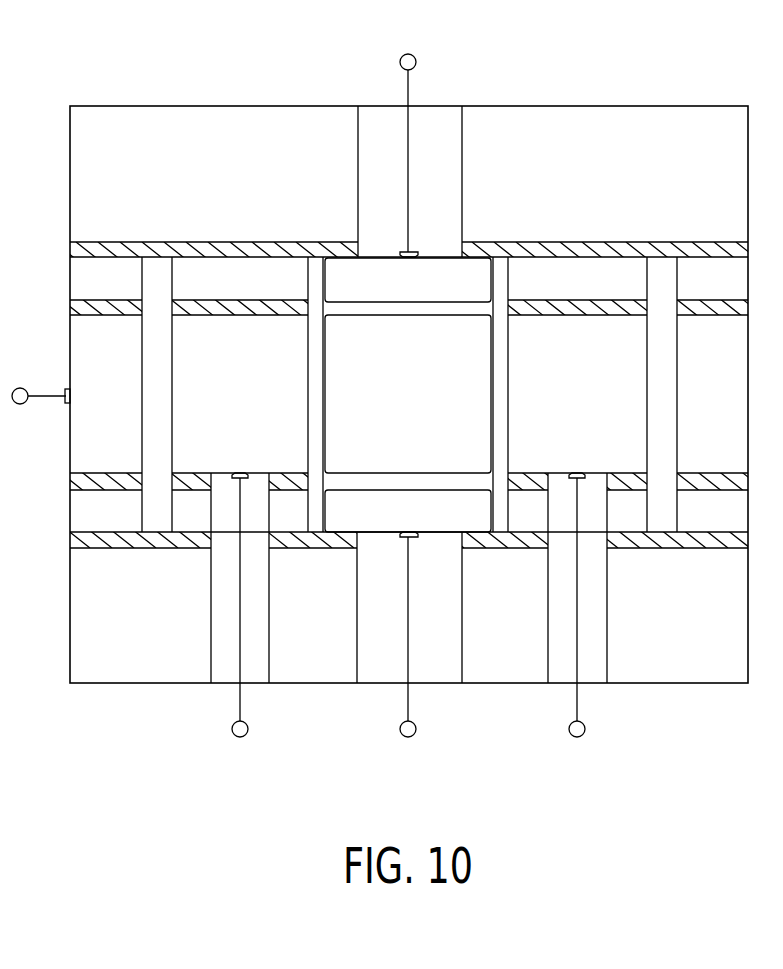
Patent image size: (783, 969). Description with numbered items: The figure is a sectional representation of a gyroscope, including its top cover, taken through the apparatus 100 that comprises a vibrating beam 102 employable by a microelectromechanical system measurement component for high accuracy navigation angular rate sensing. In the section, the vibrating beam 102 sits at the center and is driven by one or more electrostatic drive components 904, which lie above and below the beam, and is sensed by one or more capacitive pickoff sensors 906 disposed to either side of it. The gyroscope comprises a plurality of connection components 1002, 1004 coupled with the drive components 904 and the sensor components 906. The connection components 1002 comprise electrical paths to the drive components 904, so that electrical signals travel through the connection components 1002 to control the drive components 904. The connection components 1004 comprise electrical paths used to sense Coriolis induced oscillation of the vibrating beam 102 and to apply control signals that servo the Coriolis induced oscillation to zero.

The apparatus 100 is at (135, 78).
The vibrating beam 102 is at (448, 338).
The electrostatic drive component 904 is at (358, 278).
The capacitive pickoff sensor 906 is at (185, 370).
The connection component 1002 is at (412, 55).
The connection component 1004 is at (238, 737).